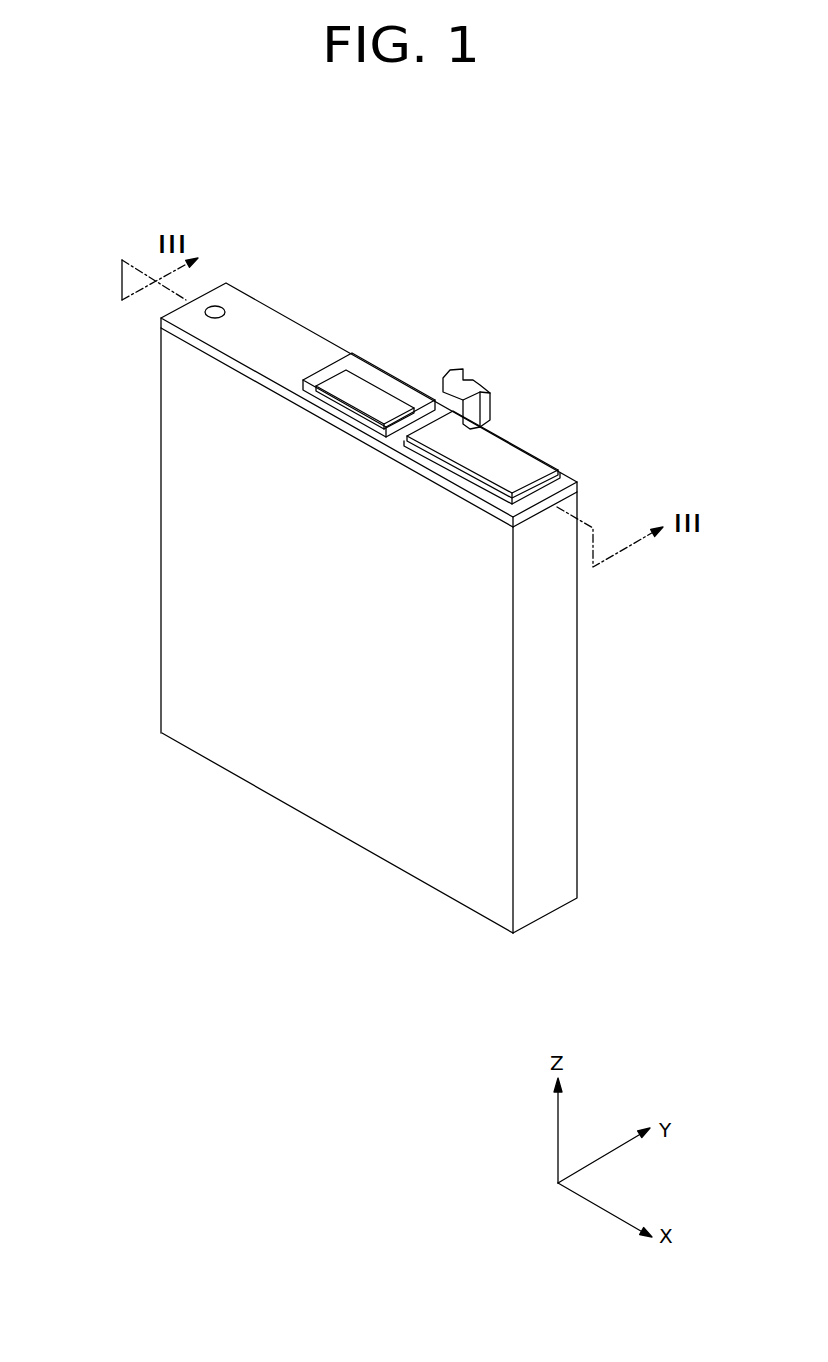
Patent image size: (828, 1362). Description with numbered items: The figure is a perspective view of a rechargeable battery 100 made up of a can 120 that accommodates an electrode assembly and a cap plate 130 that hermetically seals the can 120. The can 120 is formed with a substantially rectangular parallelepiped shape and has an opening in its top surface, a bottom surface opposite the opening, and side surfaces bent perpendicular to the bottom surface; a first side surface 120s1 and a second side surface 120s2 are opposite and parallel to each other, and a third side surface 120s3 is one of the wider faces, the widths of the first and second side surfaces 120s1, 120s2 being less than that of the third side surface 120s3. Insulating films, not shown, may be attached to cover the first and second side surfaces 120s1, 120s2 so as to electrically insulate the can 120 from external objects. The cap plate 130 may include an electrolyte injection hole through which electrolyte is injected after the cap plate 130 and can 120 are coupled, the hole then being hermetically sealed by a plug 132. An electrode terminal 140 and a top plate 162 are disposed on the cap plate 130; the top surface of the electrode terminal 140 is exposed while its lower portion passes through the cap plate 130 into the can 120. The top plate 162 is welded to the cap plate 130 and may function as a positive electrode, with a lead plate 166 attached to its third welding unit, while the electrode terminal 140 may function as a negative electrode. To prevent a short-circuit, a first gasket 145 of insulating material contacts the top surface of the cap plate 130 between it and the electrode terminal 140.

The rechargeable battery 100 is at (582, 343).
The can 120 is at (350, 843).
The first side surface 120s1 is at (161, 618).
The second side surface 120s2 is at (567, 715).
The third side surface 120s3 is at (283, 767).
The cap plate 130 is at (258, 330).
The plug 132 is at (218, 309).
The electrode terminal 140 is at (367, 372).
The first gasket 145 is at (335, 367).
The top plate 162 is at (555, 478).
The lead plate 166 is at (515, 458).